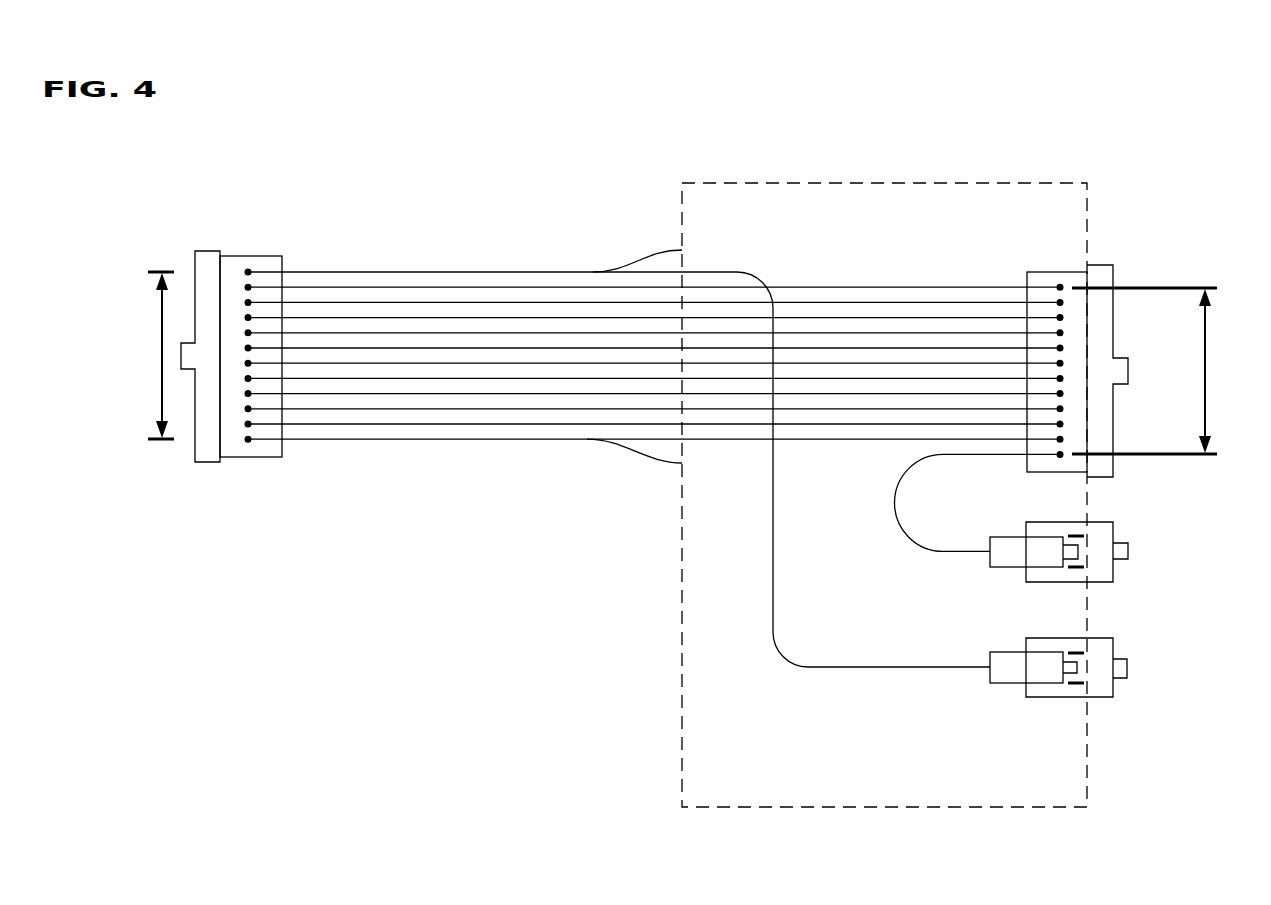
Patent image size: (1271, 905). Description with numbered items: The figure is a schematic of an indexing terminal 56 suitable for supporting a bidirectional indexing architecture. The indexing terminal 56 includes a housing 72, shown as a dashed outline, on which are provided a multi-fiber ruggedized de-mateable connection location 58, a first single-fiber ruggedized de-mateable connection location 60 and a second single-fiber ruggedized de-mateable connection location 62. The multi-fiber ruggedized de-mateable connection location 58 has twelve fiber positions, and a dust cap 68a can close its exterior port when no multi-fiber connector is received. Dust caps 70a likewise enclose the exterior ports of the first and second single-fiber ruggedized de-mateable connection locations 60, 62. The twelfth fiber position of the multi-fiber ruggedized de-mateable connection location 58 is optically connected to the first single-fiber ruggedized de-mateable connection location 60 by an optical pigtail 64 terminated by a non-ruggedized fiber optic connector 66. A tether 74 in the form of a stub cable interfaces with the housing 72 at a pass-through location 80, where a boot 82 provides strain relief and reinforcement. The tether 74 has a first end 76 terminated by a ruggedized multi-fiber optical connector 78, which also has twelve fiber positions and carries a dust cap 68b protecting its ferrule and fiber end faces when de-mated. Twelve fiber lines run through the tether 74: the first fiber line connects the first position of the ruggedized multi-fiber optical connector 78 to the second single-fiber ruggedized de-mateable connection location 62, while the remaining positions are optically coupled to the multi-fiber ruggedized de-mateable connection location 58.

The indexing terminal 56 is at (454, 107).
The multi-fiber ruggedized de-mateable connection location 58 is at (1062, 271).
The first single-fiber ruggedized de-mateable connection location 60 is at (1053, 568).
The second single-fiber ruggedized de-mateable connection location 62 is at (1058, 697).
The optical pigtail 64 is at (935, 552).
The non-ruggedized fiber optic connector 66 is at (1005, 537).
The dust cap 68a is at (1117, 357).
The dust cap 68b is at (195, 265).
The dust caps 70a is at (1113, 530).
The housing 72 is at (834, 807).
The tether 74 is at (353, 455).
The first end 76 is at (239, 488).
The ruggedized multi-fiber optical connector 78 is at (251, 255).
The pass-through location 80 is at (651, 251).
The boot 82 is at (631, 453).